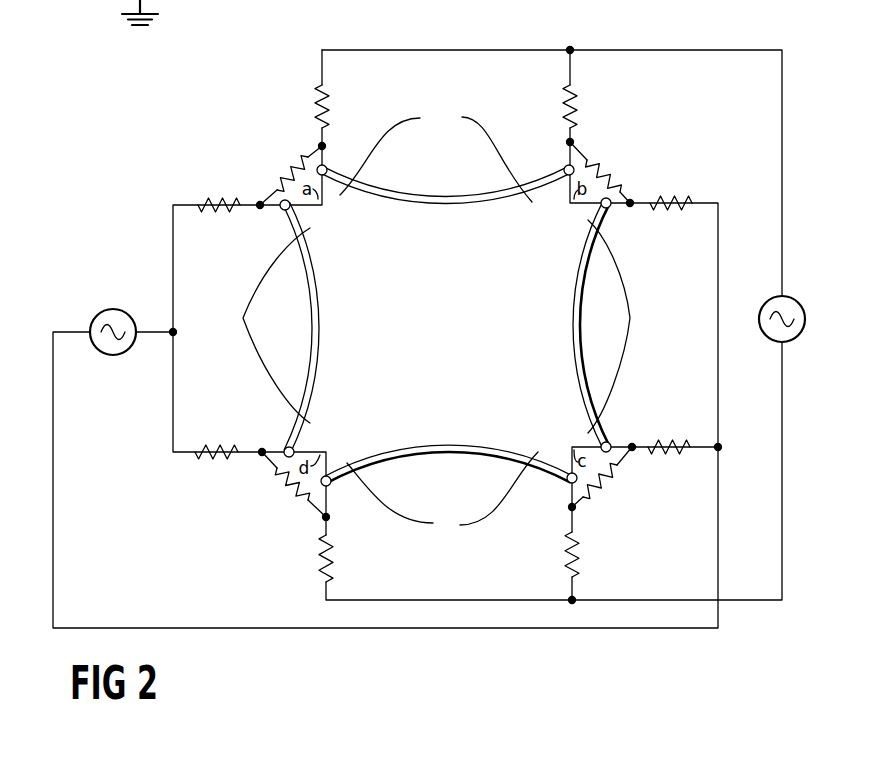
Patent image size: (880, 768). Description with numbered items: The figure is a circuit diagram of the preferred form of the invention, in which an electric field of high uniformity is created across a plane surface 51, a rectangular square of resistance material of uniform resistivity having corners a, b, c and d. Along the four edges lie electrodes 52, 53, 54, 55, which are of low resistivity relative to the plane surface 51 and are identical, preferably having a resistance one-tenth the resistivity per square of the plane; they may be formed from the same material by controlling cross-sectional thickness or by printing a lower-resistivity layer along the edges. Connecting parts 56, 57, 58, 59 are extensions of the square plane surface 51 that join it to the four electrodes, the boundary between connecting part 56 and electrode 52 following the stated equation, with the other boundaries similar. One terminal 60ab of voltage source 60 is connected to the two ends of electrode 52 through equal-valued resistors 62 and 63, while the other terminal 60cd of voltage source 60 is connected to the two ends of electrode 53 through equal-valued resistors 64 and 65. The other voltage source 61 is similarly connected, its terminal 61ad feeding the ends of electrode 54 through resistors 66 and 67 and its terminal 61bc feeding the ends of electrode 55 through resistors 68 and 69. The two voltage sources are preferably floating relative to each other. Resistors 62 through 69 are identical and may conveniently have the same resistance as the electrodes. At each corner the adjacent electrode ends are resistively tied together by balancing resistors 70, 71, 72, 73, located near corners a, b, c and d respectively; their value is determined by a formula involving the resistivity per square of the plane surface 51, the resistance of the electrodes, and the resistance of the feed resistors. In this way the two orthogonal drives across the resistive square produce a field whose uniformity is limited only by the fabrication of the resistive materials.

The plane surface 51 is at (427, 320).
The electrode 52 is at (432, 198).
The electrode 53 is at (428, 452).
The electrode 54 is at (313, 303).
The electrode 55 is at (578, 328).
The connecting part 56 is at (436, 154).
The connecting part 57 is at (442, 495).
The connecting part 58 is at (265, 325).
The connecting part 59 is at (622, 326).
The voltage source 60 is at (797, 335).
The terminal of voltage source 60ab is at (572, 46).
The terminal of voltage source 60cd is at (575, 596).
The voltage source 61 is at (94, 313).
The terminal of voltage source 61ad is at (176, 336).
The terminal of voltage source 61bc is at (720, 445).
The resistor 62 is at (312, 103).
The resistor 63 is at (576, 110).
The resistor 64 is at (316, 562).
The resistor 65 is at (580, 545).
The resistor 66 is at (213, 196).
The resistor 67 is at (203, 468).
The resistor 68 is at (670, 195).
The resistor 69 is at (661, 440).
The balancing resistor 70 is at (279, 167).
The balancing resistor 71 is at (606, 165).
The balancing resistor 72 is at (613, 485).
The balancing resistor 73 is at (283, 493).